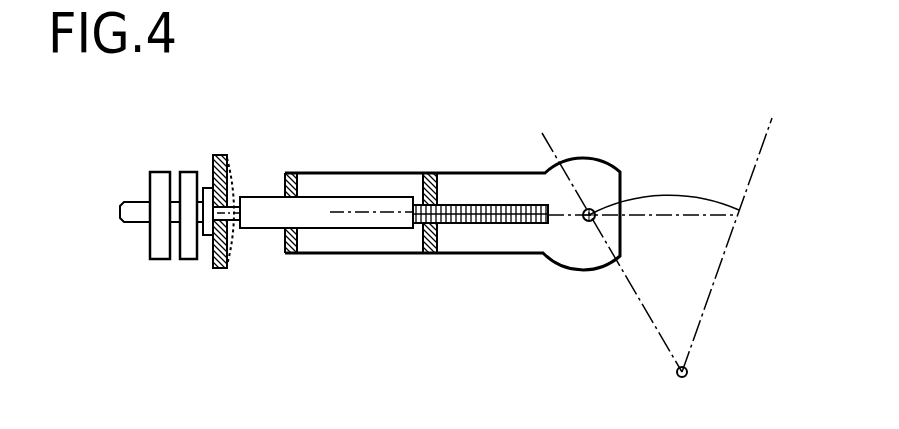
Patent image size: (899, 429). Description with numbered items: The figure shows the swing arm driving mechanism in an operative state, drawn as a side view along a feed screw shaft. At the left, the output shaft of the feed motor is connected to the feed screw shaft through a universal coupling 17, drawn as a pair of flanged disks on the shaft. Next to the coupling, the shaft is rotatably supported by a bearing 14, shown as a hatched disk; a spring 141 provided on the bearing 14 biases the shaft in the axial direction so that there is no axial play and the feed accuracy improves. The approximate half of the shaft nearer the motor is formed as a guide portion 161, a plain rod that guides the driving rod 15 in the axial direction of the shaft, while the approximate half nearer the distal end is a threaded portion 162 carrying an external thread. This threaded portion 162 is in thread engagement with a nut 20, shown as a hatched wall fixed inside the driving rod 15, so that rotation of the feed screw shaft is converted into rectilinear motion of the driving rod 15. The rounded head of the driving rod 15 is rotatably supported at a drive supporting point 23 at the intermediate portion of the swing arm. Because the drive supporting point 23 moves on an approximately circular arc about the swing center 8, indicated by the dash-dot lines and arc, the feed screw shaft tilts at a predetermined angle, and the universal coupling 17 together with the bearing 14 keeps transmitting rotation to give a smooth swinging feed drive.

The pivot axis 8 is at (677, 373).
The bearing 14 is at (218, 270).
The driving rod 15 is at (492, 254).
The universal coupling 17 is at (177, 261).
The nut 20 is at (430, 254).
The drive supporting point 23 is at (590, 209).
The spring 141 is at (229, 171).
The guide portion 161 is at (266, 229).
The threaded portion 162 is at (489, 205).